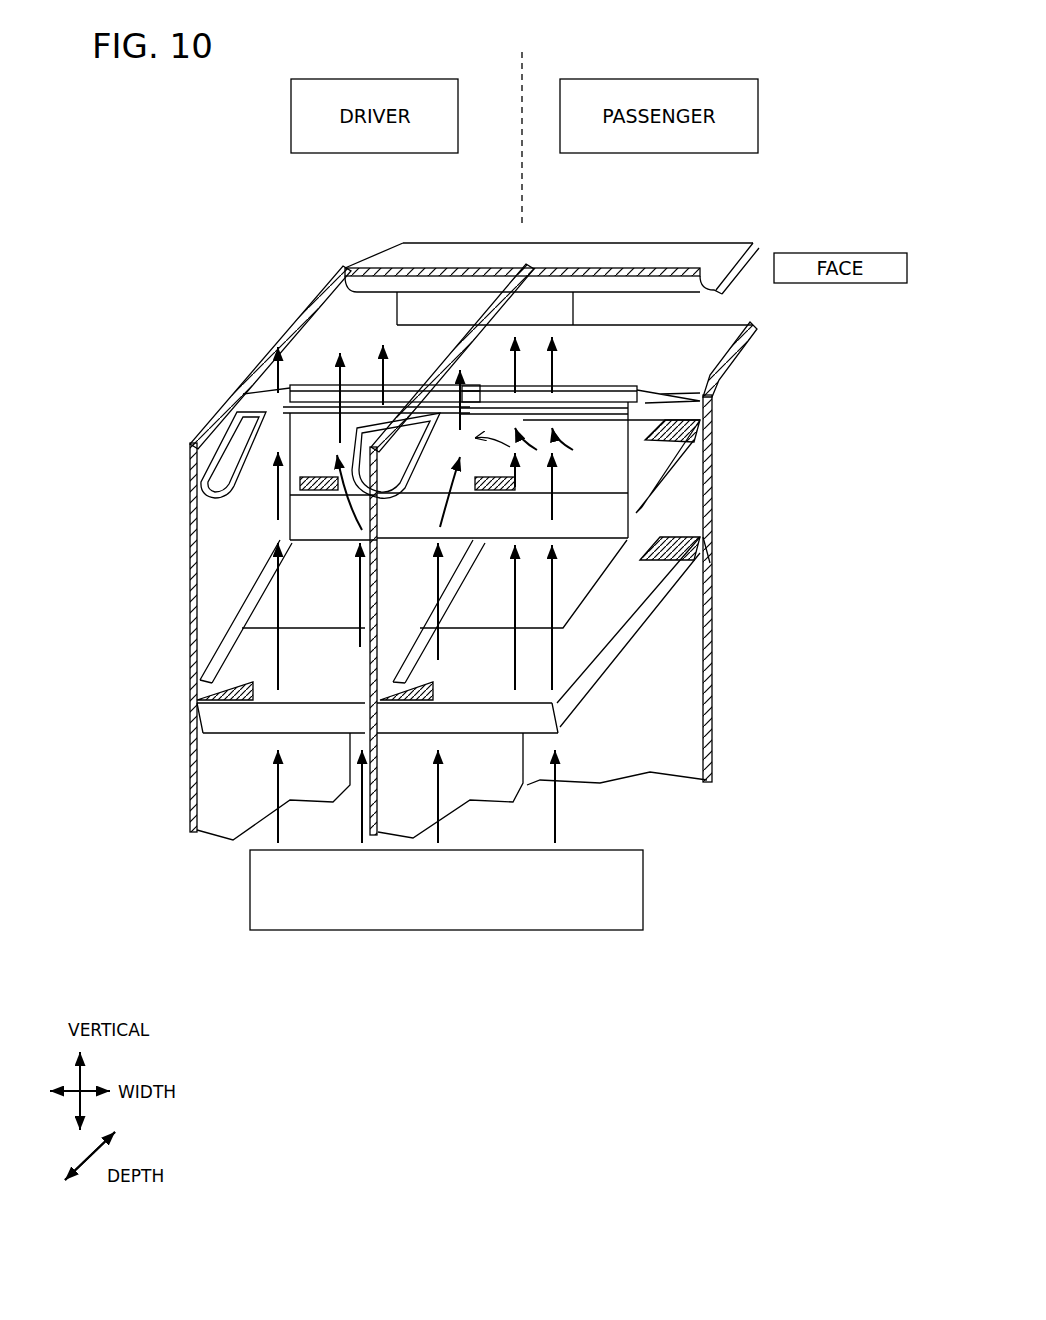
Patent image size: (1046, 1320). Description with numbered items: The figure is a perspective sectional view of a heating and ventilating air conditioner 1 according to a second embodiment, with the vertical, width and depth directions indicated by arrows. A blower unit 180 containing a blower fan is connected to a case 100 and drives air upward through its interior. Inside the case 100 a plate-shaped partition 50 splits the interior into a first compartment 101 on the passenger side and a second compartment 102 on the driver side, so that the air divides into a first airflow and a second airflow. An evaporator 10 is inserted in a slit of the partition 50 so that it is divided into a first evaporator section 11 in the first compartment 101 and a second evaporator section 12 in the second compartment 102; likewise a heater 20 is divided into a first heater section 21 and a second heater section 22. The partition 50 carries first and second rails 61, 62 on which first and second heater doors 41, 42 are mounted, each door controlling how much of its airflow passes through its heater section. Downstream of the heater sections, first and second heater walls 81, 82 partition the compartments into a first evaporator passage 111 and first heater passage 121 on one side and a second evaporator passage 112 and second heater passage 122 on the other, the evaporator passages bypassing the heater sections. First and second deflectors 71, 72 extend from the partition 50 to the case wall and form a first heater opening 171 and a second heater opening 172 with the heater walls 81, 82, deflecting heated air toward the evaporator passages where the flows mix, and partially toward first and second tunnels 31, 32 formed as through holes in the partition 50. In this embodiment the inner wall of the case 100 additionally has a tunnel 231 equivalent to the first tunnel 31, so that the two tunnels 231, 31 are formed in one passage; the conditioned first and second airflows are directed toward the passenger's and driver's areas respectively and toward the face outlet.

The heating and ventilating air conditioner 1 is at (822, 166).
The evaporator 10 is at (442, 613).
The first evaporator section 11 is at (577, 717).
The second evaporator section 12 is at (190, 765).
The heater 20 is at (456, 462).
The first heater section 21 is at (570, 470).
The second heater section 22 is at (300, 465).
The first tunnel 31 is at (455, 405).
The second tunnel 32 is at (372, 433).
The first heater door 41 is at (587, 597).
The second heater door 42 is at (263, 595).
The partition 50 is at (492, 292).
The first rail 61 is at (413, 663).
The second rail 62 is at (367, 647).
The first deflector 71 is at (610, 383).
The second deflector 72 is at (310, 383).
The first heater wall 81 is at (645, 507).
The second heater wall 82 is at (297, 517).
The case 100 is at (728, 683).
The first compartment 101 is at (647, 790).
The second compartment 102 is at (252, 790).
The first evaporator passage 111 is at (563, 583).
The second evaporator passage 112 is at (300, 585).
The first heater passage 121 is at (587, 450).
The second heater passage 122 is at (323, 435).
The first heater opening 171 is at (640, 478).
The second heater opening 172 is at (240, 482).
The blower unit 180 is at (447, 932).
The tunnel 231 is at (243, 392).